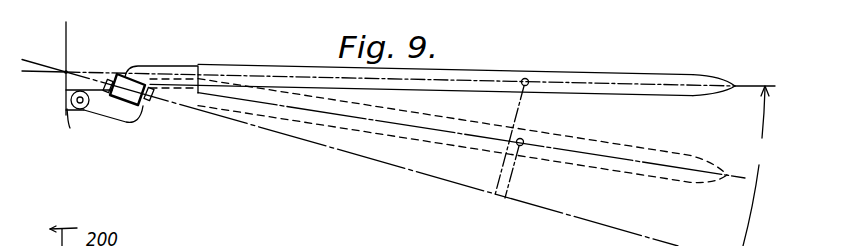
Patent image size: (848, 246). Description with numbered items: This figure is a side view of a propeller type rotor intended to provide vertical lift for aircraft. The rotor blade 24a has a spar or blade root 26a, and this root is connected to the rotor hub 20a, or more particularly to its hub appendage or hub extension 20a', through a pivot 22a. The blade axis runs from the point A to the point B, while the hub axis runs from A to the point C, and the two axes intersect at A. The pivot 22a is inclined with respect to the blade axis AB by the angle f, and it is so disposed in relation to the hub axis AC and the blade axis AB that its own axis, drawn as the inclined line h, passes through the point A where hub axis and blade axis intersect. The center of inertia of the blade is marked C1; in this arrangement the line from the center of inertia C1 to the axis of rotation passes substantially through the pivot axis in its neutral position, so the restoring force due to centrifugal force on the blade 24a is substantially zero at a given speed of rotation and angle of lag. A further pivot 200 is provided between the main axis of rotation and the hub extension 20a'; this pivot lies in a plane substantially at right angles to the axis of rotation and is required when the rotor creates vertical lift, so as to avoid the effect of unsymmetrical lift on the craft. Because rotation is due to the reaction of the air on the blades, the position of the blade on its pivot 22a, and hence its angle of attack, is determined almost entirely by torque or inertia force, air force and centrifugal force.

The arm / bracket 20a is at (70, 134).
The rotor hub extension 20a' is at (127, 134).
The pivot 200 is at (88, 110).
The pivot 22a is at (150, 100).
The rotor blade 24a is at (453, 73).
The spar or blade root 26a is at (183, 58).
The point of intersection of hub axis and blade axis A is at (64, 74).
The blade axis end point B is at (757, 80).
The hub axis end point C is at (66, 58).
The center of inertia C1 is at (528, 79).
The angle of pivot inclination f is at (756, 166).
The reference line h is at (528, 208).